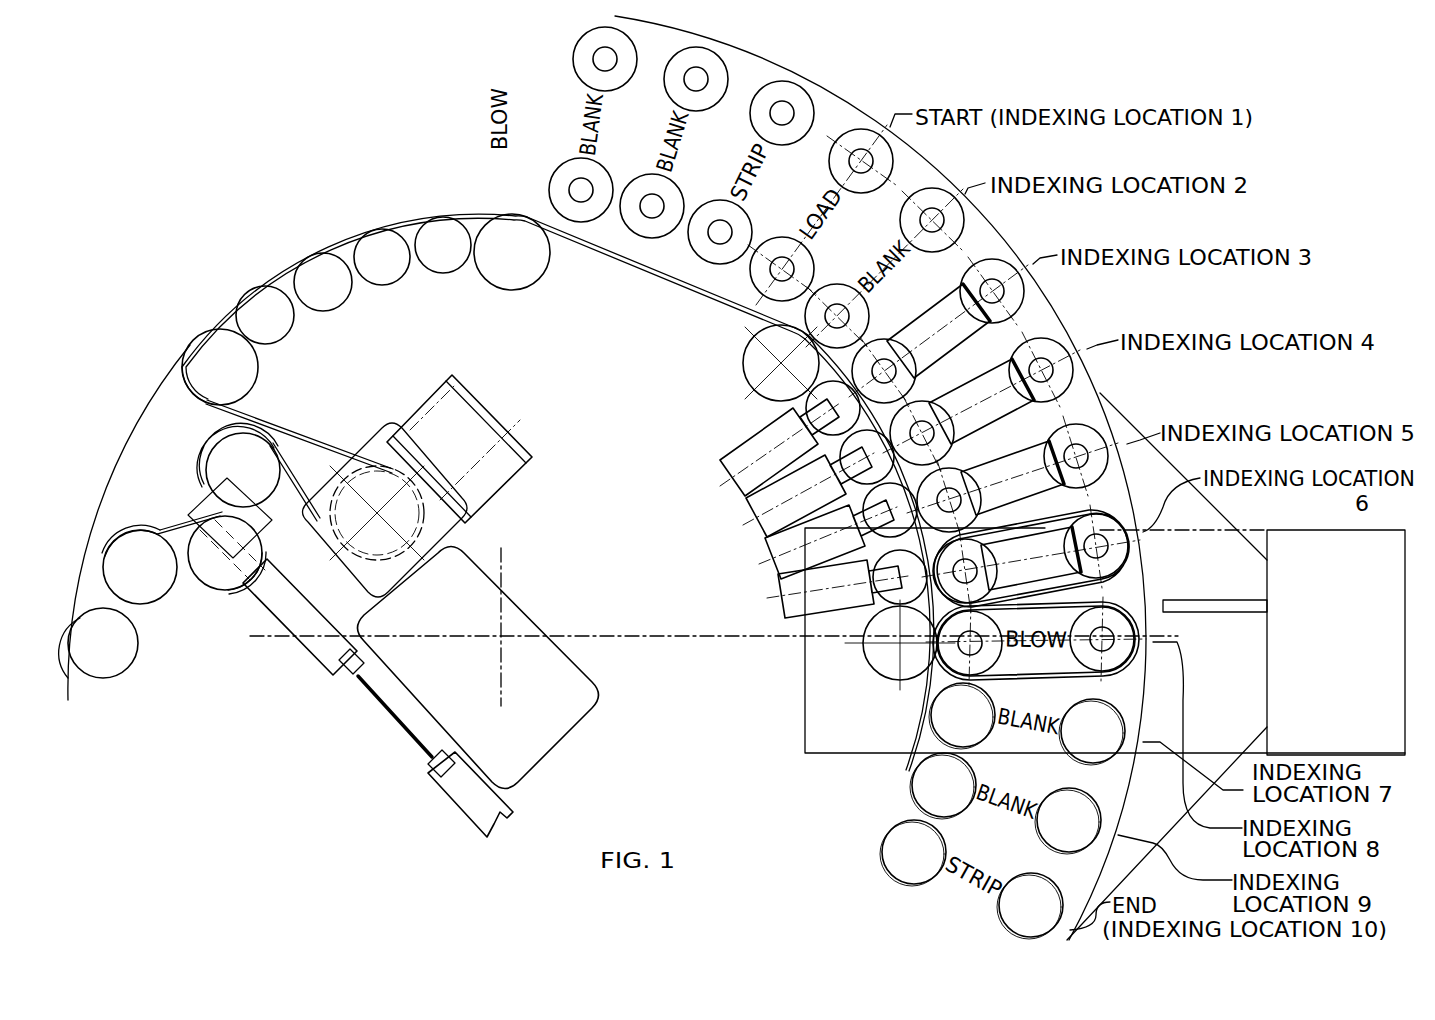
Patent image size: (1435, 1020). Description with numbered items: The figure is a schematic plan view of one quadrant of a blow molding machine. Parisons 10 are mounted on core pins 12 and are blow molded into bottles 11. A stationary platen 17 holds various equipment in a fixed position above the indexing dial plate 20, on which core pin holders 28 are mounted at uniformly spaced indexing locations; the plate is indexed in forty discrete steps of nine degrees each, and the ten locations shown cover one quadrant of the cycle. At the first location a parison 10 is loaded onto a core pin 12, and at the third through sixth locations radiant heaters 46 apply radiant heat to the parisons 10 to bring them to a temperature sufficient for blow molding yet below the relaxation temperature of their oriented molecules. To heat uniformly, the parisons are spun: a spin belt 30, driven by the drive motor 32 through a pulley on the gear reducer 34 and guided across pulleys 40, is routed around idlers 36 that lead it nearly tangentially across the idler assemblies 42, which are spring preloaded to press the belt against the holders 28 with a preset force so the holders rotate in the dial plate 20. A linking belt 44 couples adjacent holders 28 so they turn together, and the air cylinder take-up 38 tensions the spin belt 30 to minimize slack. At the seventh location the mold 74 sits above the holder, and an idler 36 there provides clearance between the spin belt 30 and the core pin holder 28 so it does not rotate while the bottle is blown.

The parison 10 is at (946, 207).
The bottle 11 is at (1062, 737).
The core pin 12 is at (801, 103).
The stationary platen 17 is at (378, 370).
The indexing dial plate 20 is at (765, 66).
The core pin holder 28 is at (1081, 416).
The spin belt 30 is at (738, 310).
The spin belt drive motor 32 is at (478, 668).
The gear reducer 34 is at (401, 527).
The idler 36 is at (243, 368).
The air cylinder take-up 38 is at (428, 792).
The pulley 40 is at (208, 458).
The idler assembly 42 is at (780, 595).
The linking belt 44 is at (1095, 590).
The radiant heater 46 is at (1016, 253).
The mold 74 is at (1262, 522).